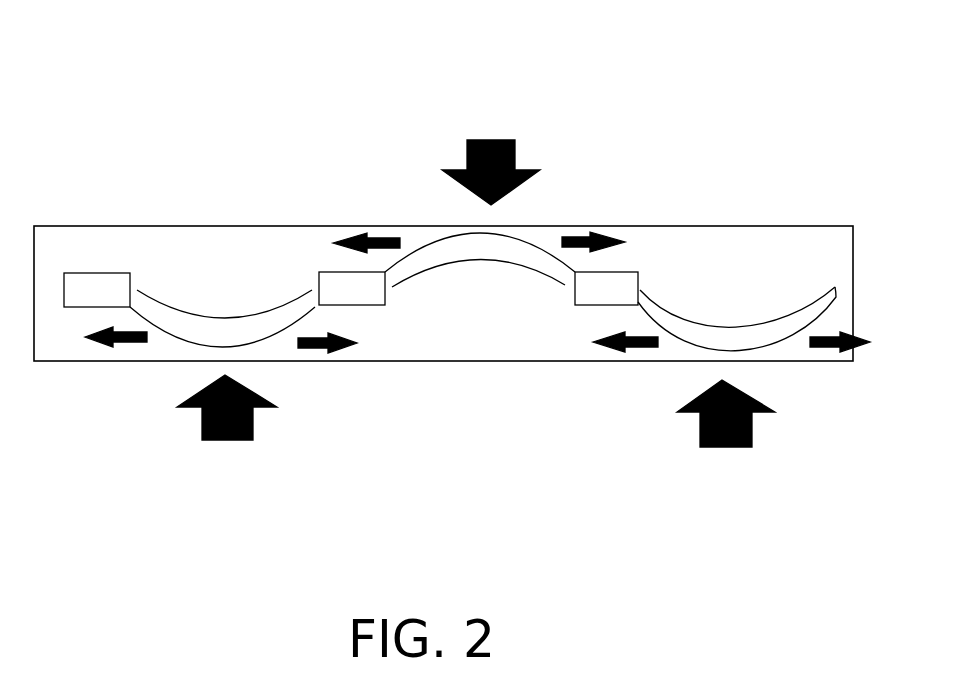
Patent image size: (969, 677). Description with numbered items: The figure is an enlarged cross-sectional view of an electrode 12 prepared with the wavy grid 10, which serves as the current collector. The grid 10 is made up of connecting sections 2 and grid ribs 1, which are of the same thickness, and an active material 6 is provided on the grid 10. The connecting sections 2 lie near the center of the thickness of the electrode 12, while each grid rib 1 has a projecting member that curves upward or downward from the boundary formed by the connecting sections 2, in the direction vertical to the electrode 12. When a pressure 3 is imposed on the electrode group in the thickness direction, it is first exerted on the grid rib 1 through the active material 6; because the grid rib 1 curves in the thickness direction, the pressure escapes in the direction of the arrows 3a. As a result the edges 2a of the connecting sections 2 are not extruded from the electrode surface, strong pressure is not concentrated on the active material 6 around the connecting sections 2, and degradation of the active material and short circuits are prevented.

The electrode 12 is at (84, 57).
The active material 6 is at (803, 240).
The connecting section of grid 2 is at (100, 282).
The edge of connecting section 2a is at (318, 272).
The grid rib 1 is at (190, 322).
The grid 10 is at (160, 148).
The pressure applied to electrode group 3 is at (478, 140).
The direction in which pressure is applied 3a is at (379, 228).